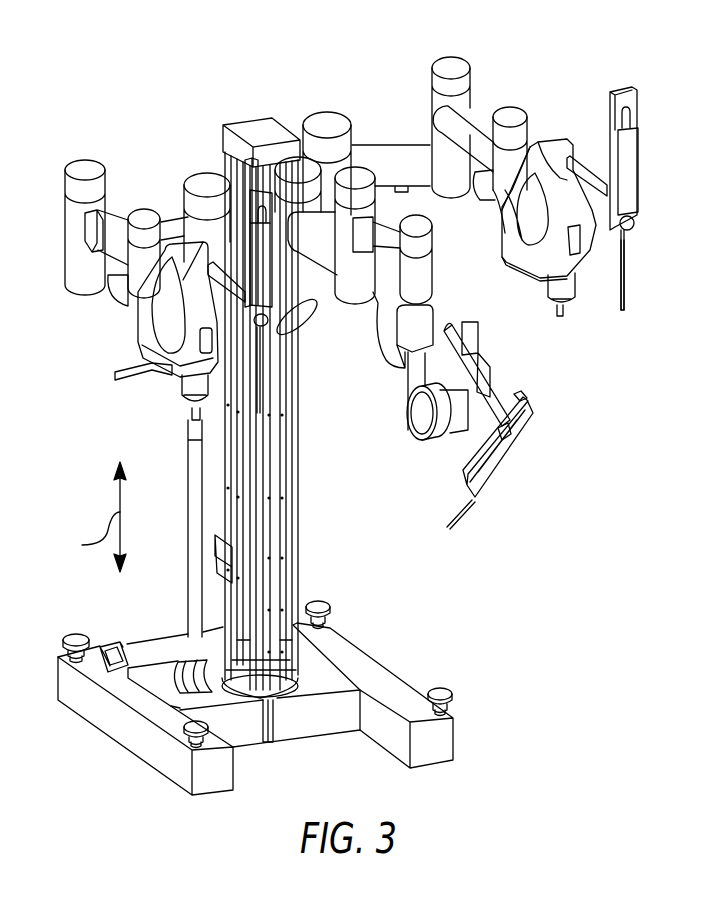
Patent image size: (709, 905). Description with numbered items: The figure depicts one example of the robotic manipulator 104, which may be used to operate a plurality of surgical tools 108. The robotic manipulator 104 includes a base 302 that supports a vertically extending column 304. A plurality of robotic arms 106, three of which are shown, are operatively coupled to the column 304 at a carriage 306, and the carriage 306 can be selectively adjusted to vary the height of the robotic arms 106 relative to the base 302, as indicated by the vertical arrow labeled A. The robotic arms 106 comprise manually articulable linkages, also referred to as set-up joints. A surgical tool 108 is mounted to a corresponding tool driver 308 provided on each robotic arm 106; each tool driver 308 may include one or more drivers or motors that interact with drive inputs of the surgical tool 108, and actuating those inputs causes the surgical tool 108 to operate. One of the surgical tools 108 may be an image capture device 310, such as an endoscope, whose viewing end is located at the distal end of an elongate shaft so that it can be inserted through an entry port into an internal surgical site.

The robotic manipulator 104 is at (118, 80).
The robotic arm 106 is at (124, 320).
The surgical tool 108 is at (275, 302).
The base 302 is at (400, 695).
The column 304 is at (303, 520).
The carriage 306 is at (308, 288).
The tool driver 308 is at (236, 172).
The image capture device 310 is at (621, 307).